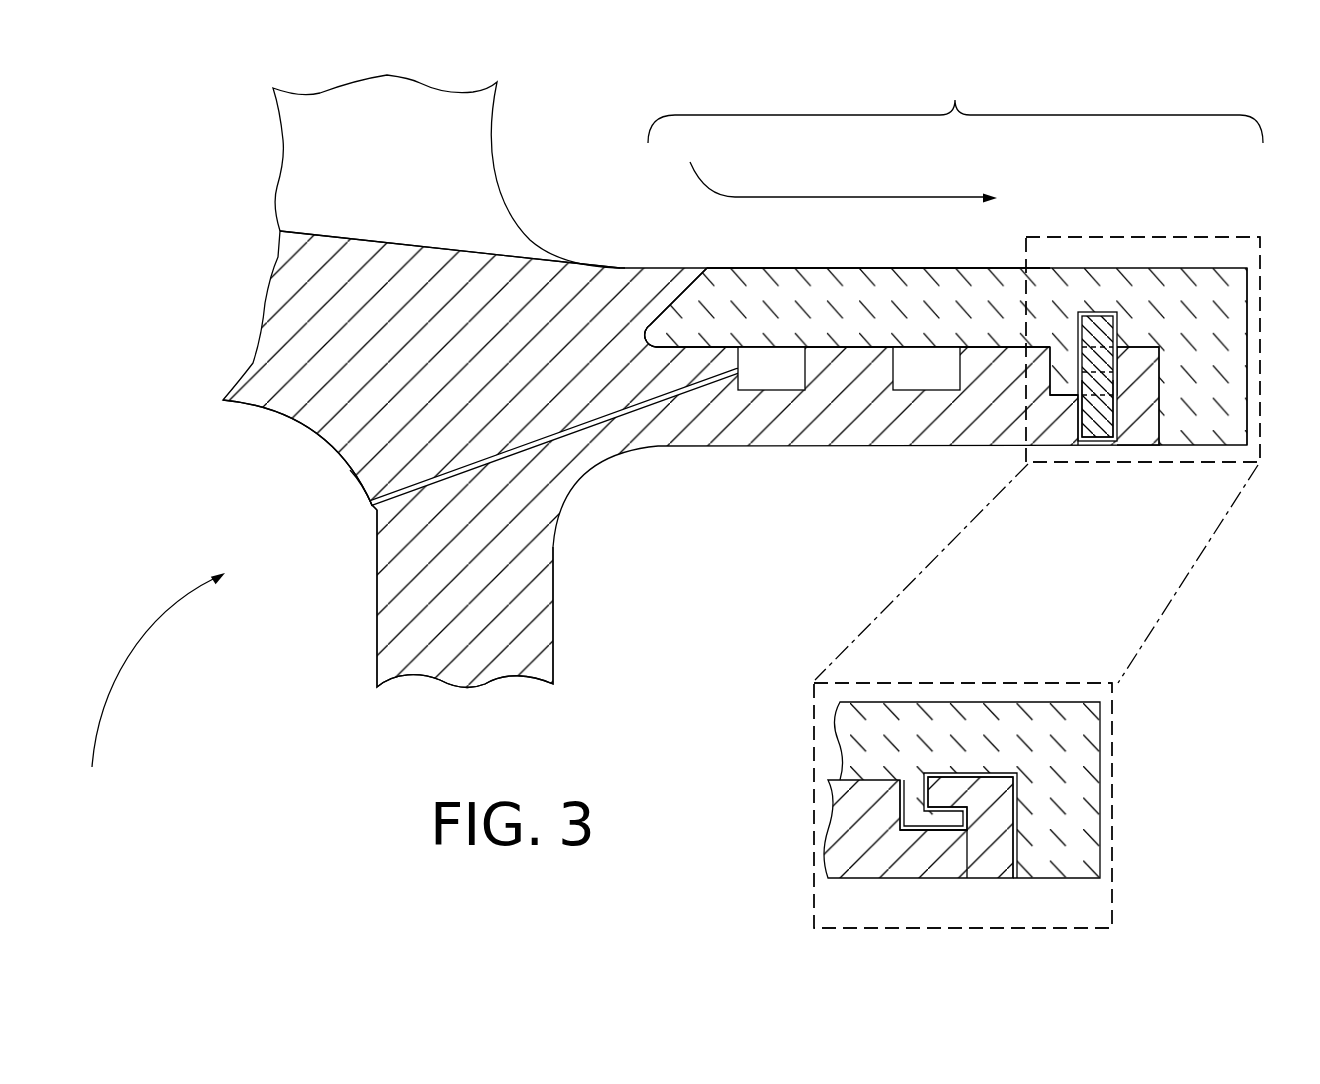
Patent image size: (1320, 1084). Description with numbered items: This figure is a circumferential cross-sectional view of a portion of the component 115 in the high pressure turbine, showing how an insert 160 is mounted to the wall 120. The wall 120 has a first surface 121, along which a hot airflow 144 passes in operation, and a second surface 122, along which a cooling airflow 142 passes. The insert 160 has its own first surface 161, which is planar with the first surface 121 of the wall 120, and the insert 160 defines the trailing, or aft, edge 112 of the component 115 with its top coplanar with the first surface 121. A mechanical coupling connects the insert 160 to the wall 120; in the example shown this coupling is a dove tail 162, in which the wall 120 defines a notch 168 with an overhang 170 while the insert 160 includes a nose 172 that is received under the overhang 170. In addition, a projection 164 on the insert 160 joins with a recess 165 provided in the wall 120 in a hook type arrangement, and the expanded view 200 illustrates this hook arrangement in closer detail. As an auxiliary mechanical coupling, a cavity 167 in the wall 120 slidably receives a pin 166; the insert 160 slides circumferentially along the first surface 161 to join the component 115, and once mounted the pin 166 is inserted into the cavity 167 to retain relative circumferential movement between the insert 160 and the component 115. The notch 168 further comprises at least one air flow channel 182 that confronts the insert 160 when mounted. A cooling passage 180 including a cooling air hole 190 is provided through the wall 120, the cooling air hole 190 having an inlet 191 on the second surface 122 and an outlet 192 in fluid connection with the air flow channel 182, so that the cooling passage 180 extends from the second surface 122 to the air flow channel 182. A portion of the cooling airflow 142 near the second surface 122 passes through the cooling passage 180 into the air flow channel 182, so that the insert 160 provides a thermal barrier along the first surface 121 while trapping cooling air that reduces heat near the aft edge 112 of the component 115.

The trailing edge 112 is at (1248, 315).
The component 115 is at (178, 108).
The wall 120 is at (295, 317).
The first surface 121 is at (297, 227).
The second surface 122 is at (243, 405).
The cooling airflow 142 is at (120, 660).
The hot airflow 144 is at (867, 197).
The insert 160 is at (1258, 273).
The first surface 161 is at (698, 348).
The dove tail 162 is at (1140, 455).
The projection 164 is at (1065, 362).
The recess 165 is at (1067, 425).
The pin 166 is at (1107, 313).
The cavity 167 is at (1095, 433).
The notch 168 is at (955, 98).
The overhang 170 is at (621, 276).
The nose 172 is at (667, 326).
The cooling passage 180 is at (360, 510).
The air flow channel 182 is at (907, 375).
The cooling air hole 190 is at (478, 470).
The inlet 191 is at (367, 510).
The outlet 192 is at (740, 371).
The expanded view 200 is at (1223, 462).